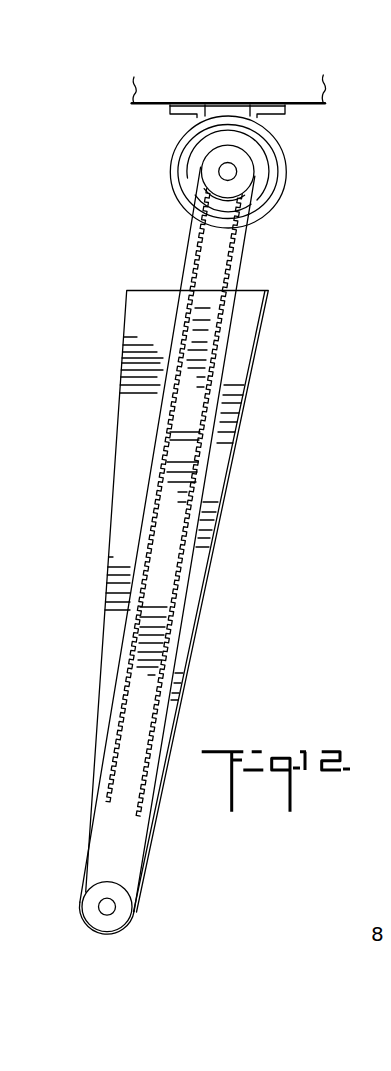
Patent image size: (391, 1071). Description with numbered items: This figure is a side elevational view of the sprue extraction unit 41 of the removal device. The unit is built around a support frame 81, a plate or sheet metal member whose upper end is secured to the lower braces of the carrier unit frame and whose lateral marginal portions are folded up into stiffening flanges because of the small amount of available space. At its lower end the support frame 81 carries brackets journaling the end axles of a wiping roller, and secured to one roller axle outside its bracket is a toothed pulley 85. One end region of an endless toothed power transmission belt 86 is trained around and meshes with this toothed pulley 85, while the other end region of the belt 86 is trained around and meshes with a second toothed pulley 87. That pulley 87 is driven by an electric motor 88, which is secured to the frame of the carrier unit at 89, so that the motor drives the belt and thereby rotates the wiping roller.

The sprue extraction unit 41 is at (202, 552).
The support frame 81 is at (248, 336).
The toothed pulley 85 is at (122, 918).
The endless toothed power transmission belt 86 is at (238, 262).
The toothed pulley 87 is at (208, 170).
The electric motor 88 is at (275, 177).
The motor mounting location 89 is at (325, 103).